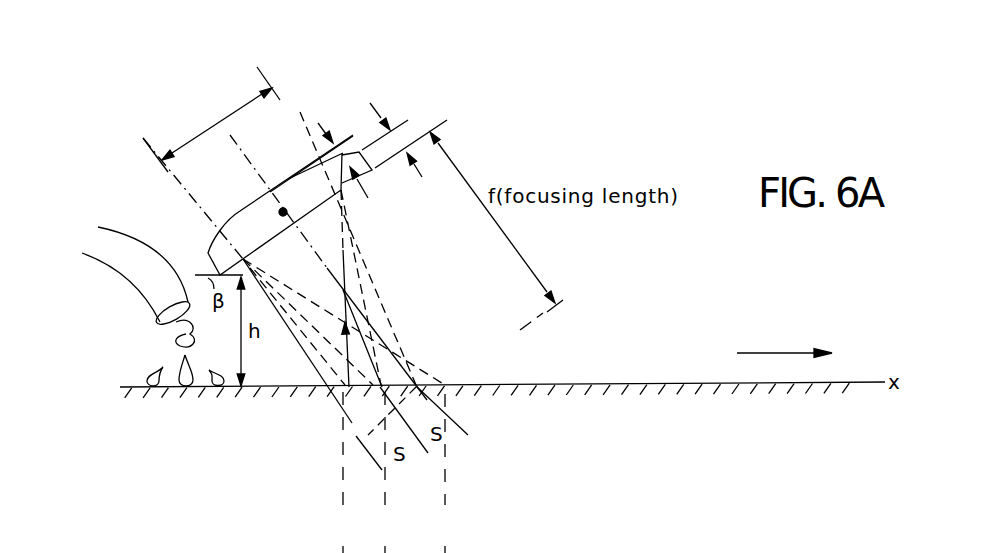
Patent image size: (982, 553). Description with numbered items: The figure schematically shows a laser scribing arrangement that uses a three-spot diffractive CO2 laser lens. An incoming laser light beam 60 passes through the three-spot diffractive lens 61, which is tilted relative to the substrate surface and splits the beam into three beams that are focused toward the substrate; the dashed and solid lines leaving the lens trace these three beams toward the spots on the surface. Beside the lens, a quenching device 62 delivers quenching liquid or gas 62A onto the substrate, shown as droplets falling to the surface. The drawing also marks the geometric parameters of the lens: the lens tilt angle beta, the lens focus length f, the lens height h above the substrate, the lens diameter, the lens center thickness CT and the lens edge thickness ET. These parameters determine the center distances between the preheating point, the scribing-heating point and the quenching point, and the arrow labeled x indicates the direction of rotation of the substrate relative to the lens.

The incoming laser light beam 60 is at (213, 80).
The three-spot diffractive lens 61 is at (272, 181).
The quenching device 62 is at (93, 243).
The quenching liquid or gas 62A is at (175, 337).
The lens edge thickness ET is at (412, 135).
The lens center thickness CT is at (345, 165).